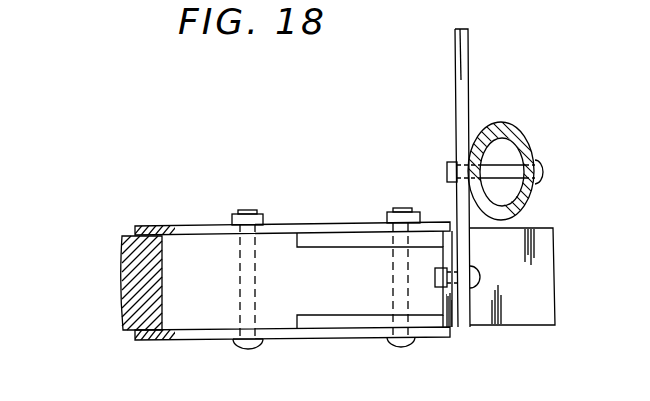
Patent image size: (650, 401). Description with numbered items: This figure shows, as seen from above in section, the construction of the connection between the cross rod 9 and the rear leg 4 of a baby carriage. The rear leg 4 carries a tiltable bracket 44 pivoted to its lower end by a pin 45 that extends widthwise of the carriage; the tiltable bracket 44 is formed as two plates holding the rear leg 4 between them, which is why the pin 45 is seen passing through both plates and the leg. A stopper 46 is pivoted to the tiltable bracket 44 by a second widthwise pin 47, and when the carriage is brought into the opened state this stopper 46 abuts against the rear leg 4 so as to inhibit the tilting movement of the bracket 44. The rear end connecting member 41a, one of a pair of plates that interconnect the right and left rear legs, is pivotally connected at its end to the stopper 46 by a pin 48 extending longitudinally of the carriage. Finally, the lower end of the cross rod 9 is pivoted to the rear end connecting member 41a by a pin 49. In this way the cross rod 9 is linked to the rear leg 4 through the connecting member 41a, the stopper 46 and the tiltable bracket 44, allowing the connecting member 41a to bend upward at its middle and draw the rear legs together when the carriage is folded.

The rear leg 4 is at (541, 318).
The cross rod 9 is at (511, 133).
The rear end connecting member 41a is at (457, 66).
The tiltable bracket 44 is at (202, 228).
The pin 45 is at (238, 302).
The stopper 46 is at (320, 243).
The pin 47 is at (400, 346).
The pin 48 is at (478, 282).
The pin 49 is at (543, 176).